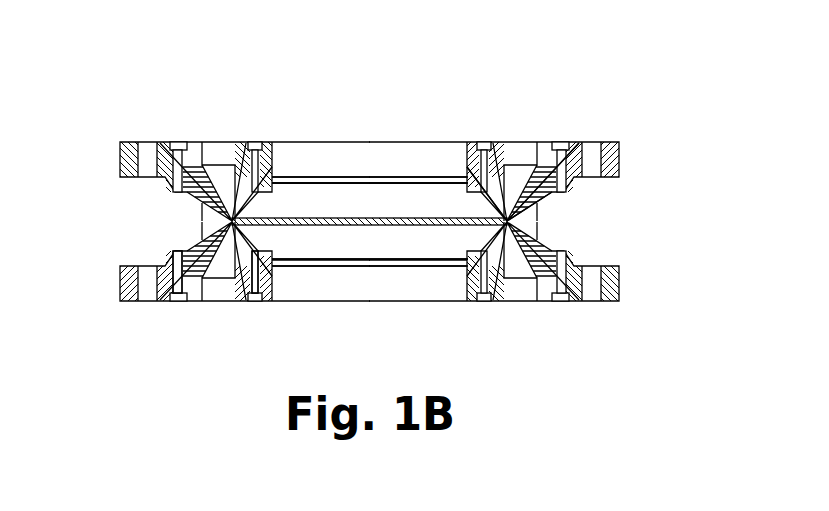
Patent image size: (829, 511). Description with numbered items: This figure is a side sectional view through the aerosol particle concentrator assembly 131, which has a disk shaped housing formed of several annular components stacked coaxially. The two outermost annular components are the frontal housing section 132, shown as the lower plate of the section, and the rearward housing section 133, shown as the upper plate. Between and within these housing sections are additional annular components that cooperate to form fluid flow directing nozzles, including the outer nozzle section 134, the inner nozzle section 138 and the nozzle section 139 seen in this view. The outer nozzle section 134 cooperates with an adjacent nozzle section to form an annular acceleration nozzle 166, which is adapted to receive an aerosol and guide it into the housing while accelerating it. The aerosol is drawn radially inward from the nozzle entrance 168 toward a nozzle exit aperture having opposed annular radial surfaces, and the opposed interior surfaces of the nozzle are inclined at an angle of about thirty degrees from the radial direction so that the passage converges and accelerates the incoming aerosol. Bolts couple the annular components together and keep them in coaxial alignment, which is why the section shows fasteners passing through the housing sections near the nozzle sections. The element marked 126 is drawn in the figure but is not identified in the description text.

The concentrator assembly 131 is at (612, 80).
The rearward housing section 133 is at (123, 142).
The frontal housing section 132 is at (120, 283).
The inner nozzle section 138 is at (300, 142).
The nozzle section 139 is at (378, 200).
The annular acceleration nozzle 166 is at (510, 221).
The connector lug 126 is at (543, 199).
The nozzle entrance 168 is at (172, 258).
The outer nozzle section 134 is at (222, 258).